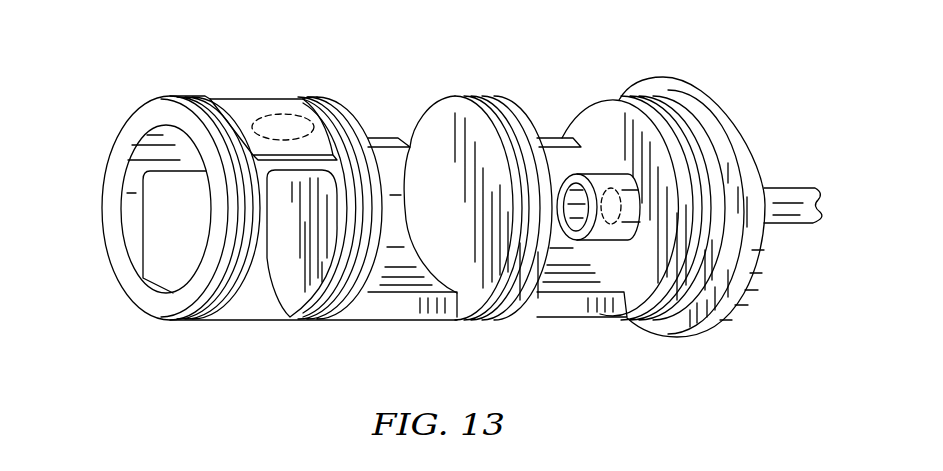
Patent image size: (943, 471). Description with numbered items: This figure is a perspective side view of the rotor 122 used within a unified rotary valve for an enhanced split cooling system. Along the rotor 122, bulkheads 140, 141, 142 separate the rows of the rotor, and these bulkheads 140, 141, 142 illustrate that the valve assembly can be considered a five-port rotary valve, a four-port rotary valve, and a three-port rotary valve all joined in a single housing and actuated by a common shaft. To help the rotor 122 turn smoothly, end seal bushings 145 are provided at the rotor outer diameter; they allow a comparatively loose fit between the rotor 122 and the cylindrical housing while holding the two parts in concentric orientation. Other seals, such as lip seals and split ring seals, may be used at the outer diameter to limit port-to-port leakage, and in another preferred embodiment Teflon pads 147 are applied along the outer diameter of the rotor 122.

The rotor 122 is at (112, 46).
The bulkhead 140 is at (299, 276).
The bulkhead 141 is at (477, 277).
The bulkhead 142 is at (640, 277).
The end seal bushing 145 is at (160, 98).
The Teflon pad 147 is at (260, 107).